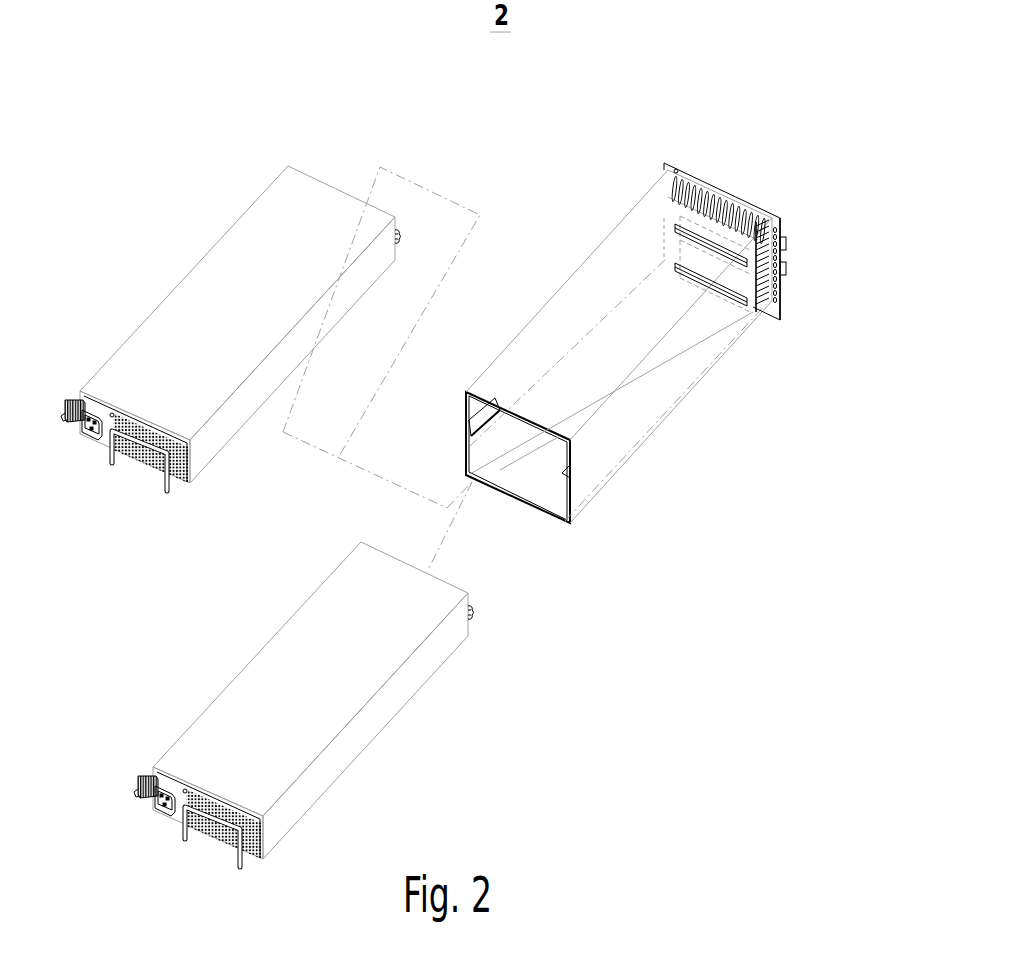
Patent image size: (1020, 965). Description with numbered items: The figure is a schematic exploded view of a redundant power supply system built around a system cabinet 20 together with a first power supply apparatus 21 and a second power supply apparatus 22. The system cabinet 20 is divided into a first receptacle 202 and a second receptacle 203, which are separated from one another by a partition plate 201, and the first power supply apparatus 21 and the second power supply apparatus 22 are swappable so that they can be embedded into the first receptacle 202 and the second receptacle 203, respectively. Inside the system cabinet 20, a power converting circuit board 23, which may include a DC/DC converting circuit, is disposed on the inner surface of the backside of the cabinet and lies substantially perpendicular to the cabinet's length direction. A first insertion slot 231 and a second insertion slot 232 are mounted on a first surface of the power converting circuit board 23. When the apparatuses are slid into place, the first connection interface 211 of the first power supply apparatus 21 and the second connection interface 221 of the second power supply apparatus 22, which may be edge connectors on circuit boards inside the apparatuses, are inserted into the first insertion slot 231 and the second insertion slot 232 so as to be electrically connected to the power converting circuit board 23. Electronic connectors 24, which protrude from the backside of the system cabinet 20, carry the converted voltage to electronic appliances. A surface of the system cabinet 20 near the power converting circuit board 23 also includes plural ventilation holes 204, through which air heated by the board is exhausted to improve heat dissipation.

The system cabinet 20 is at (643, 345).
The partition plate 201 is at (472, 417).
The first receptacle 202 is at (523, 443).
The second receptacle 203 is at (534, 483).
The ventilation holes 204 is at (668, 188).
The first power supply apparatus 21 is at (212, 285).
The first connection interface 211 is at (397, 228).
The second power supply apparatus 22 is at (290, 660).
The second connection interface 221 is at (470, 608).
The power converting circuit board 23 is at (673, 243).
The first insertion slot 231 is at (676, 225).
The second insertion slot 232 is at (673, 260).
The electronic connectors 24 is at (782, 235).